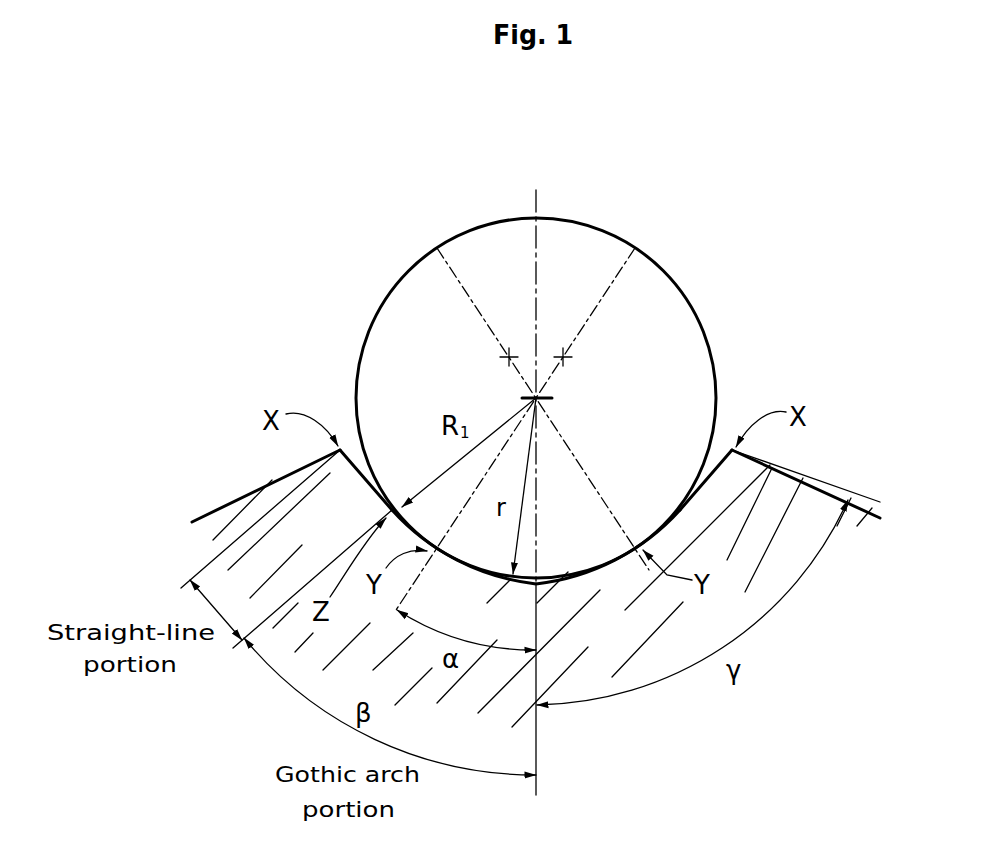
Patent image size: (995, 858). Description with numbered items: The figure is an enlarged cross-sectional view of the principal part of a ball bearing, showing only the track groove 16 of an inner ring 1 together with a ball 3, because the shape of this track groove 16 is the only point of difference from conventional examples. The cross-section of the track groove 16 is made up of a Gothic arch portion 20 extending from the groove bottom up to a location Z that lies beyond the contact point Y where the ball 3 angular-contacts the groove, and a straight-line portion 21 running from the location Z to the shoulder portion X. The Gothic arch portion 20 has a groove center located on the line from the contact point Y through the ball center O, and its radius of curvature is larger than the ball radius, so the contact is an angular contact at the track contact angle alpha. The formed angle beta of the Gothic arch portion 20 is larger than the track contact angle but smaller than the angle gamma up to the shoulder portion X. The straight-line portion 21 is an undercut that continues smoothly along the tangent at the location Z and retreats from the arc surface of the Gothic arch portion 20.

The inner ring 1 is at (222, 508).
The ball 3 is at (667, 308).
The track groove 16 is at (585, 566).
The Gothic arch portion 20 is at (481, 562).
The straight-line portion 21 is at (364, 482).